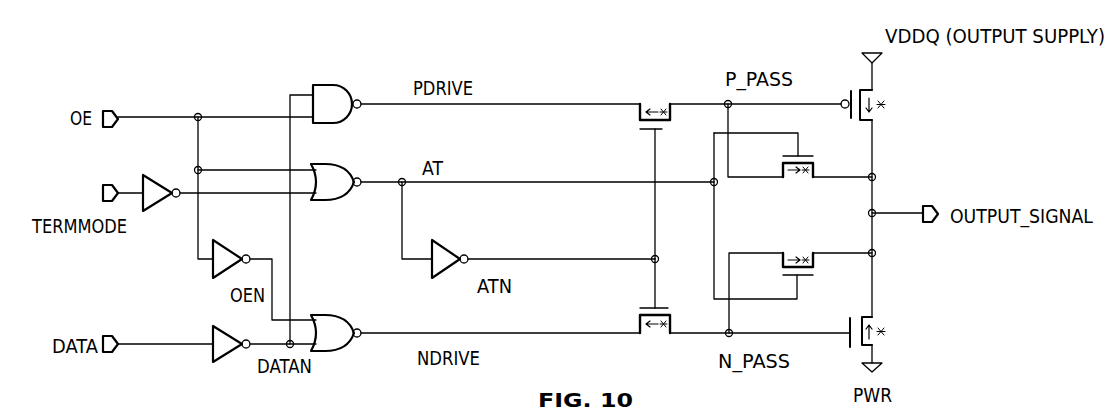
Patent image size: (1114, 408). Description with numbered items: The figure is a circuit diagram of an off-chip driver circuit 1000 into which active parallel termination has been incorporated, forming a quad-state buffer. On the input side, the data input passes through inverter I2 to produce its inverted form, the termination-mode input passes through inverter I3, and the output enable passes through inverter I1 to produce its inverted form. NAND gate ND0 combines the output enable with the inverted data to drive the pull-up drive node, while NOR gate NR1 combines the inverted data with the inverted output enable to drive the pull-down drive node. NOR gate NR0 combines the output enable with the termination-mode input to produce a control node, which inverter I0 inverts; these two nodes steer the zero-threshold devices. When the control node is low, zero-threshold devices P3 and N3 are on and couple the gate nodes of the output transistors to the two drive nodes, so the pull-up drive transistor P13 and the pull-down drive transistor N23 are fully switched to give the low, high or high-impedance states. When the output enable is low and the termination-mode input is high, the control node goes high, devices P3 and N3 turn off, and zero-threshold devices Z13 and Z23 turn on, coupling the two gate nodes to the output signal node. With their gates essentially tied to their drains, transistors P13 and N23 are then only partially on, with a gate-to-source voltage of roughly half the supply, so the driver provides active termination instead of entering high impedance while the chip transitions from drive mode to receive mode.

The off-chip driver circuit 1000 is at (595, 70).
The inverter I3 is at (163, 185).
The inverter I1 is at (232, 253).
The inverter I2 is at (232, 337).
The inverter I0 is at (451, 251).
The NAND gate ND0 is at (351, 99).
The NOR gate NR0 is at (350, 176).
The NOR gate NR1 is at (349, 327).
The zero-threshold NFET device P3 is at (662, 181).
The zero-threshold NFET device N3 is at (662, 296).
The zero-threshold NFET device Z13 is at (777, 165).
The zero-threshold NFET device Z23 is at (776, 271).
The drive transistor P13 is at (876, 98).
The drive transistor N23 is at (881, 324).